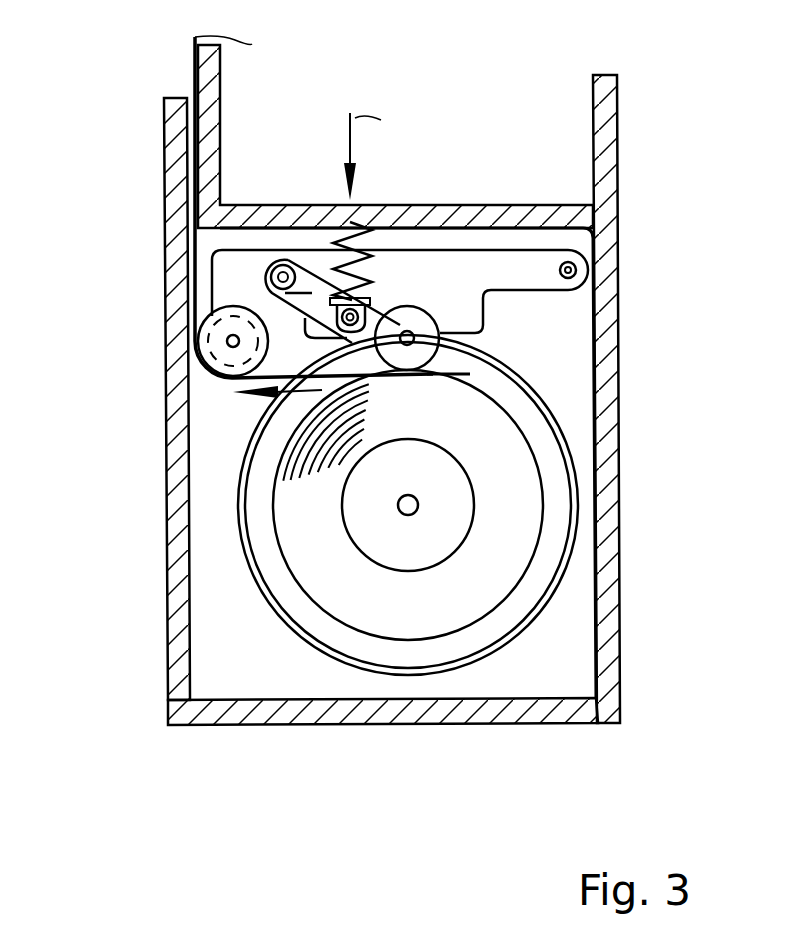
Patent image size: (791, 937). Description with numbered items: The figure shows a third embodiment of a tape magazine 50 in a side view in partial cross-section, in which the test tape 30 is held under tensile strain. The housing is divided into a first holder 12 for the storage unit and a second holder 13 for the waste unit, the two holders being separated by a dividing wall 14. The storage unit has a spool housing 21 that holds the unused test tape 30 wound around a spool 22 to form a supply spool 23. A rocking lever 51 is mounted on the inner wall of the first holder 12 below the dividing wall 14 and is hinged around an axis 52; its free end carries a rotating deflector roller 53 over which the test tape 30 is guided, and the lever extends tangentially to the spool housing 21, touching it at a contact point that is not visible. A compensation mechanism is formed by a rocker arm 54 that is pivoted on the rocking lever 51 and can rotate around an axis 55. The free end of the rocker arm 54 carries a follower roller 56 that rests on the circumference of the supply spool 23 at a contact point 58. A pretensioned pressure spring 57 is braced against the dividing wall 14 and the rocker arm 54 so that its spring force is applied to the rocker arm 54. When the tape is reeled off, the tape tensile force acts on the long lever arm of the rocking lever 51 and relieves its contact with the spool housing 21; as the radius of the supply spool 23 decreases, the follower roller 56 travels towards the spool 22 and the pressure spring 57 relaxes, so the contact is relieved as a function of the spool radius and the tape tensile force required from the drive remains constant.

The first holder 12 is at (227, 633).
The second holder 13 is at (567, 152).
The dividing wall 14 is at (517, 204).
The spool housing 21 is at (552, 590).
The spool 22 is at (418, 505).
The supply spool 23 is at (498, 547).
The test tape 30 is at (194, 70).
The tape magazine 50 is at (650, 84).
The rocking lever 51 is at (522, 273).
The axis 52 is at (577, 270).
The deflector roller 53 is at (202, 372).
The rocker arm 54 is at (268, 293).
The axis 55 is at (270, 280).
The follower roller 56 is at (425, 330).
The pressure spring 57 is at (335, 238).
The contact point 58 is at (430, 370).